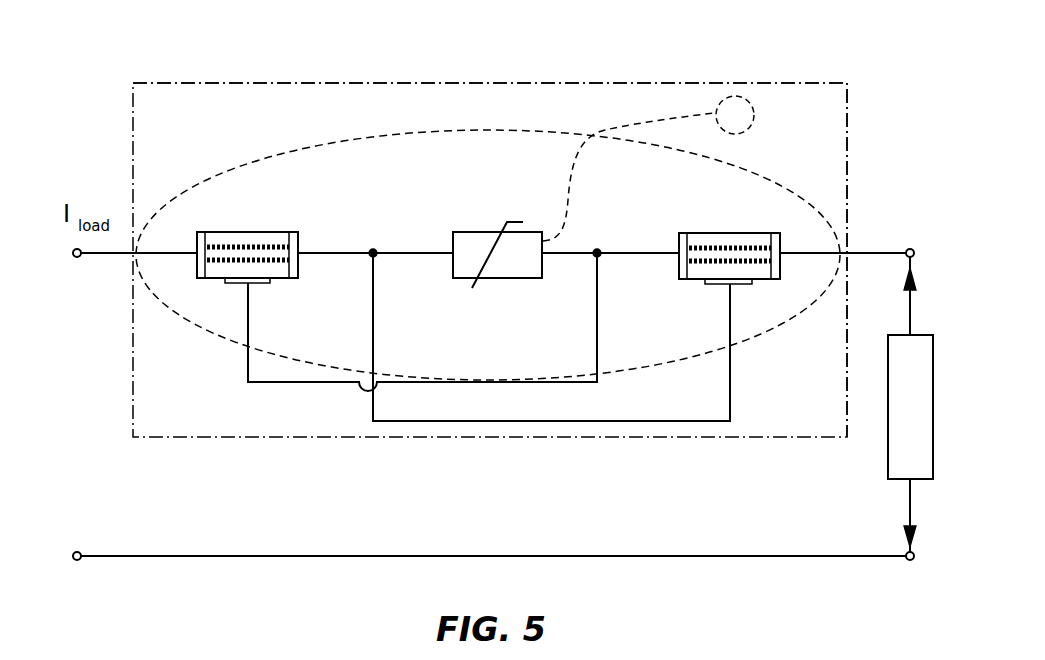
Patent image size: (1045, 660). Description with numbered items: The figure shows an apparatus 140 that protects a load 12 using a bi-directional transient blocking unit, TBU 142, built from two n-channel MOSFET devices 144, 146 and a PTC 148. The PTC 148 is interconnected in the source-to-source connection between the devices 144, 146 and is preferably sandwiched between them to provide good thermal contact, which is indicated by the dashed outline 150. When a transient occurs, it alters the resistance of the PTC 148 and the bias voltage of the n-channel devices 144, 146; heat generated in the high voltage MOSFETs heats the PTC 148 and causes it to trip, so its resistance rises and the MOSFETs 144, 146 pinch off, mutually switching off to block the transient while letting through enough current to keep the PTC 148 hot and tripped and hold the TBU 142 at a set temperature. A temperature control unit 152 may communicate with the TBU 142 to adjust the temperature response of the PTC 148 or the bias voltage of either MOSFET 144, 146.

The load 12 is at (888, 461).
The apparatus 140 is at (118, 99).
The TBU 142 is at (848, 185).
The n-channel device 144 is at (272, 232).
The n-channel device 146 is at (693, 233).
The PTC 148 is at (493, 232).
The dashed outline 150 is at (286, 155).
The temperature control unit 152 is at (755, 120).